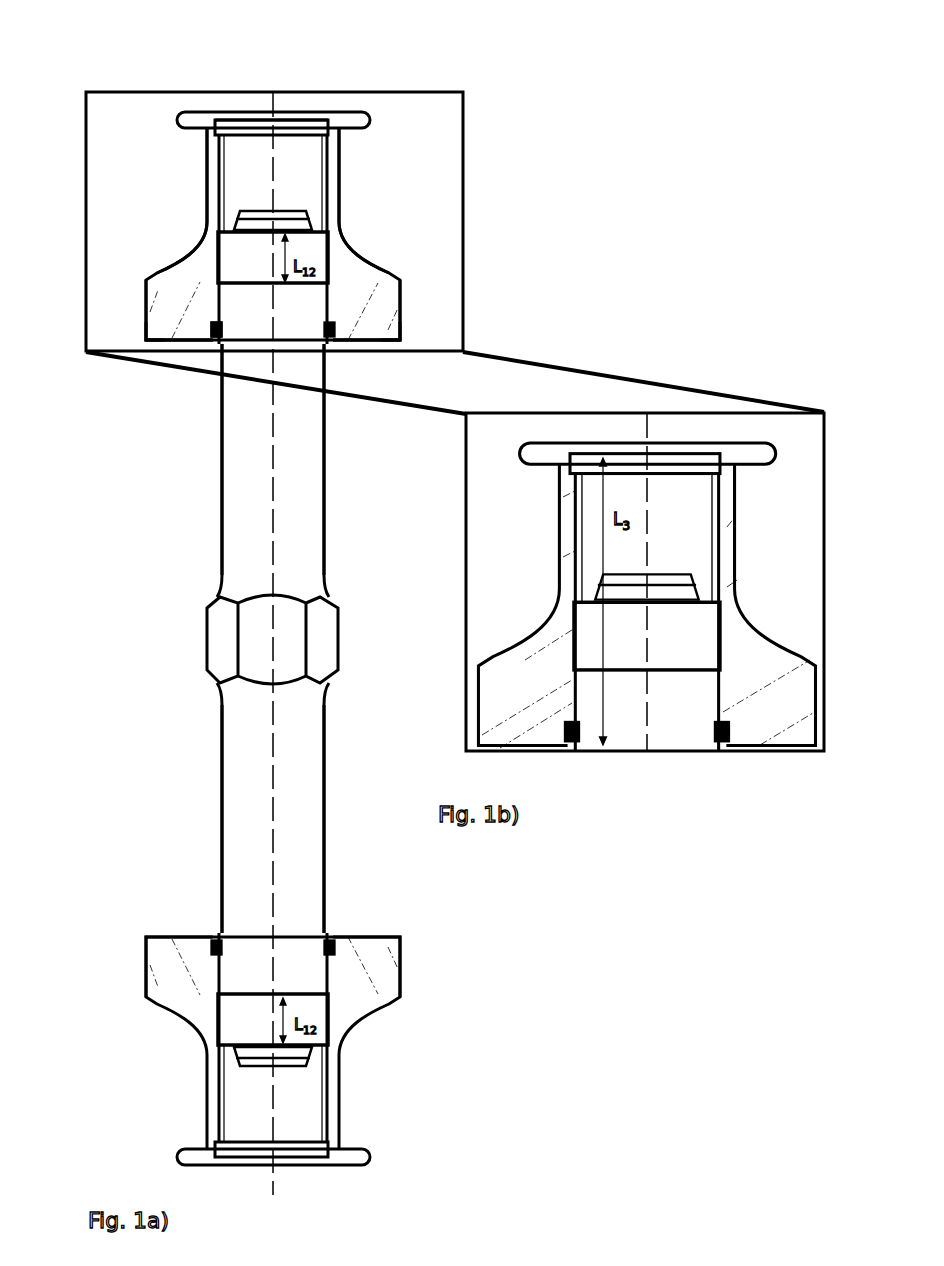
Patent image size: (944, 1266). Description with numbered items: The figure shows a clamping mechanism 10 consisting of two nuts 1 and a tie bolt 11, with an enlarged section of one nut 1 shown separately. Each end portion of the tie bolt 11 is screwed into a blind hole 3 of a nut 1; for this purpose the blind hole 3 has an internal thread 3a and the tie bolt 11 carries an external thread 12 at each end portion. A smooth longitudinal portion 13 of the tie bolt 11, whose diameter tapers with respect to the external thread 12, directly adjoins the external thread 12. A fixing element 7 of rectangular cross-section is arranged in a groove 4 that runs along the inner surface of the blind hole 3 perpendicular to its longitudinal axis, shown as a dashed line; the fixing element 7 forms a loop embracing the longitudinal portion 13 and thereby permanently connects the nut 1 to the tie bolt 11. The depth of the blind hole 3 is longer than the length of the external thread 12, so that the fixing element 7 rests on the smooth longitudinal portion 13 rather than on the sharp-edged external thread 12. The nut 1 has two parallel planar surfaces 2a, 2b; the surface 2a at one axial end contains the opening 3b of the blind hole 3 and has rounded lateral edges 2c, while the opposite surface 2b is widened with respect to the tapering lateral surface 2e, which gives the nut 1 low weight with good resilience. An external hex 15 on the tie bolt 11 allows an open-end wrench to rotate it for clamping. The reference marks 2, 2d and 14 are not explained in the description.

In FIG. 1A, the nut 1 is at (358, 104).
In FIG. 1B, the nut 1 is at (673, 441).
In FIG. 1A, the connecting body 2 is at (383, 305).
In FIG. 1A, the surface 2a is at (363, 347).
In FIG. 1B, the surface 2a is at (733, 755).
In FIG. 1A, the surface 2b is at (222, 108).
In FIG. 1B, the surface 2b is at (731, 440).
In FIG. 1A, the lateral edges 2c is at (145, 350).
In FIG. 1A, the flange 2d is at (180, 118).
In FIG. 1B, the flange 2d is at (520, 443).
In FIG. 1A, the lateral surface 2e is at (155, 270).
In FIG. 1A, the blind hole 3 is at (300, 182).
In FIG. 1A, the internal thread 3a is at (338, 150).
In FIG. 1A, the opening 3b is at (312, 128).
In FIG. 1A, the groove 4 is at (205, 325).
In FIG. 1A, the fixing element 7 is at (212, 340).
In FIG. 1B, the fixing element 7 is at (580, 755).
In FIG. 1A, the clamping mechanism 10 is at (212, 543).
In FIG. 1A, the tie bolt 11 is at (243, 795).
In FIG. 1A, the external thread 12 is at (207, 190).
In FIG. 1A, the longitudinal portion 13 is at (328, 345).
In FIG. 1A, the projection 14 is at (272, 208).
In FIG. 1A, the external hex 15 is at (225, 628).